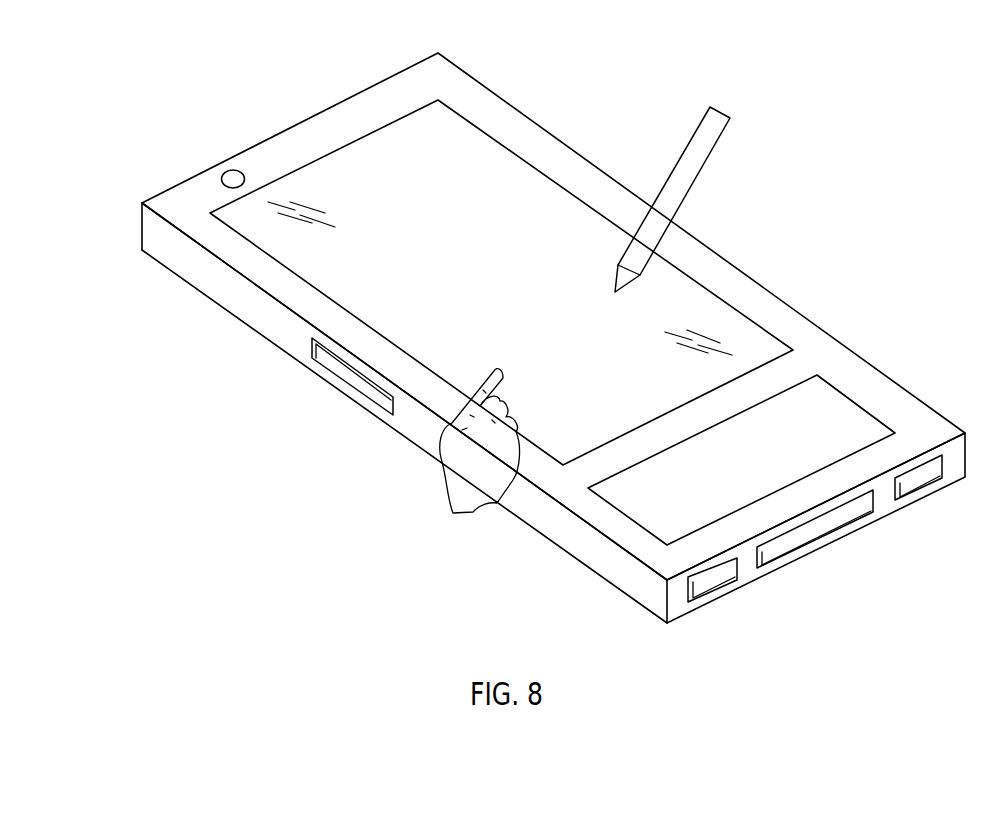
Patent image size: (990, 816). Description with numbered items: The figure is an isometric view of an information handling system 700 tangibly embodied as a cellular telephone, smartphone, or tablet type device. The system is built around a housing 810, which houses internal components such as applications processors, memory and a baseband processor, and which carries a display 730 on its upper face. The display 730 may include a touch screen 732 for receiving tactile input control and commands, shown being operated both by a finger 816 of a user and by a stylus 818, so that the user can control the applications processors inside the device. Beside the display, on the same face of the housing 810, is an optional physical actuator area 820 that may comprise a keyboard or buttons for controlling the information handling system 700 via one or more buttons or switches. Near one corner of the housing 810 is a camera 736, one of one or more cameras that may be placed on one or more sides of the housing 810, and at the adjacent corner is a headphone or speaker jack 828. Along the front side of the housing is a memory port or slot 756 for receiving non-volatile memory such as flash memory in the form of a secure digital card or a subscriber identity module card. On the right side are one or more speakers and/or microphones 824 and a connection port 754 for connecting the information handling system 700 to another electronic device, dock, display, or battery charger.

The information handling system 700 is at (565, 80).
The housing 810 is at (383, 80).
The headphone or speaker jack 828 is at (163, 190).
The camera 736 is at (226, 170).
The display 730 is at (414, 159).
The touch screen 732 is at (530, 285).
The stylus 818 is at (690, 140).
The finger 816 is at (495, 370).
The physical actuator area 820 is at (825, 420).
The memory port or slot 756 is at (330, 370).
The connection port 754 is at (830, 533).
The speakers and/or microphones 824 is at (715, 588).